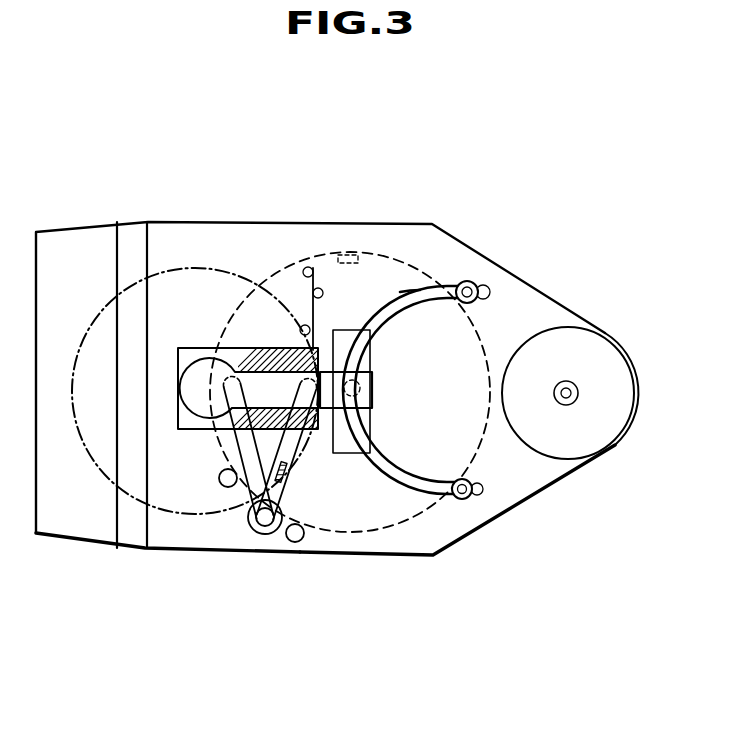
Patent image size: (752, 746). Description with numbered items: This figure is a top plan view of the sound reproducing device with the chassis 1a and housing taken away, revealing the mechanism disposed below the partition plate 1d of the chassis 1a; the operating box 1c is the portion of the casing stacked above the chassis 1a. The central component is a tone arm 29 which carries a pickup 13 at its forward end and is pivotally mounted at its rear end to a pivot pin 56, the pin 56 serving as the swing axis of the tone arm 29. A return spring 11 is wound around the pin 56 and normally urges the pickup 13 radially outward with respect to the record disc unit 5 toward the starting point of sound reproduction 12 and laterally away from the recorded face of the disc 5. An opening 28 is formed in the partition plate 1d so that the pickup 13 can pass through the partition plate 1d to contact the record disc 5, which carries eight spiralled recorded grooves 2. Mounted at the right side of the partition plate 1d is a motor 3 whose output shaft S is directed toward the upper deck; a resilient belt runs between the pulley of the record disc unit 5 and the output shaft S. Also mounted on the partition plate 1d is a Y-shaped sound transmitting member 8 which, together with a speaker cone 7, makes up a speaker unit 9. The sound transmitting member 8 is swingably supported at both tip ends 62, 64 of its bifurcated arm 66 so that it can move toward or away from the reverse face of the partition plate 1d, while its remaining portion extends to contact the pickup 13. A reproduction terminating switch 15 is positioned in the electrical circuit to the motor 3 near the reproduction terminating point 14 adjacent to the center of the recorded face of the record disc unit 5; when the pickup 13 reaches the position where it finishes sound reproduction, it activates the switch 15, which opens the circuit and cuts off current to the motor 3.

The chassis 1a is at (568, 474).
The operating box 1c is at (205, 532).
The partition plate 1d is at (457, 530).
The speaker cone 7 is at (108, 478).
The opening 28 is at (187, 350).
The spiralled recorded grooves 2 is at (247, 350).
The starting point of sound reproduction 12 is at (220, 430).
The pickup 13 is at (280, 350).
The sound transmitting member 8 is at (372, 402).
The record disc unit 5 is at (430, 278).
The speaker unit 9 is at (400, 497).
The bifurcated arm 66 is at (400, 292).
The tip end 62 is at (478, 282).
The tip end 64 is at (462, 500).
The motor 3 is at (588, 350).
The output shaft S is at (575, 402).
The reproduction terminating switch 15 is at (313, 317).
The reproduction terminating point 14 is at (317, 413).
The pivot pin 56 is at (263, 527).
The return spring 11 is at (288, 542).
The tone arm 29 is at (285, 473).